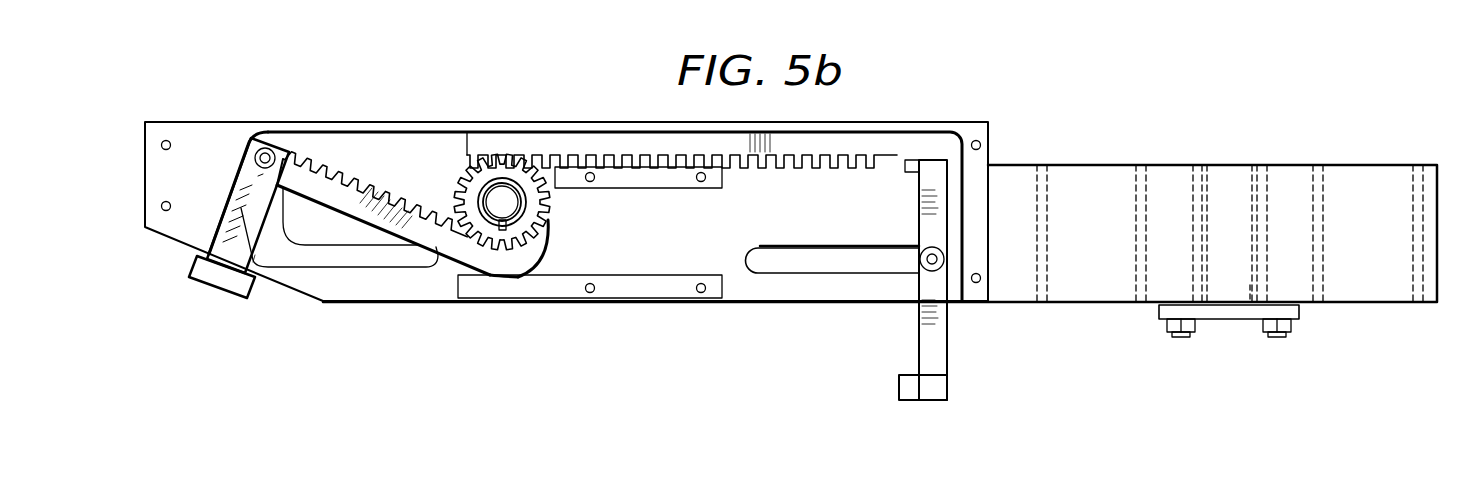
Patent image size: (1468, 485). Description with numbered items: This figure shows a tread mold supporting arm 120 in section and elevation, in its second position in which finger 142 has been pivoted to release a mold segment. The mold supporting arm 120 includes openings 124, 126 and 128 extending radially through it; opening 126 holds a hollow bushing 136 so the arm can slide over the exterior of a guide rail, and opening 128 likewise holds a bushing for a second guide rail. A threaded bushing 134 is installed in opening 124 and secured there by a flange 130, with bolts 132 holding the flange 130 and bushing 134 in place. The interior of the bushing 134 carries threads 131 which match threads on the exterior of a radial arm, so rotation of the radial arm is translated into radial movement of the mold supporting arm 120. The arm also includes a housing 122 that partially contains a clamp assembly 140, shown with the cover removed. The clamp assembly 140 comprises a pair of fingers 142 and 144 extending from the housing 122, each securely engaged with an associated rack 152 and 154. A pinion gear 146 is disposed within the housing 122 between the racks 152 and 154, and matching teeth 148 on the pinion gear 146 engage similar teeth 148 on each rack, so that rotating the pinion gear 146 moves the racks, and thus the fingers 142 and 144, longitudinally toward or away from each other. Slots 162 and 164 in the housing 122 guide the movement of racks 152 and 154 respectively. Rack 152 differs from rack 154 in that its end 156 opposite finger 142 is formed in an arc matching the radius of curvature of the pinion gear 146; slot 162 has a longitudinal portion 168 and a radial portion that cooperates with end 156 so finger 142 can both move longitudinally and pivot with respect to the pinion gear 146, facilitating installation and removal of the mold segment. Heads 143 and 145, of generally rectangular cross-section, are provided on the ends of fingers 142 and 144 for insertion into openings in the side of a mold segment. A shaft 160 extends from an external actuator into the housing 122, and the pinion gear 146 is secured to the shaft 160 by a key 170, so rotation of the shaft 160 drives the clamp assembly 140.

The mold supporting arm 120 is at (1023, 329).
The housing 122 is at (324, 114).
The opening 124 is at (1255, 165).
The opening 126 is at (1138, 165).
The opening 128 is at (1414, 165).
The flange 130 is at (1302, 315).
The threads 131 is at (1252, 282).
The bolts 132 is at (1181, 338).
The threaded bushing 134 is at (1200, 165).
The hollow bushing 136 is at (1040, 164).
The clamp assembly 140 is at (422, 150).
The finger 142 is at (252, 170).
The head 143 is at (210, 302).
The finger 144 is at (950, 342).
The head 145 is at (899, 385).
The pinion gear 146 is at (501, 177).
The teeth 148 is at (541, 172).
The rack 152 is at (432, 250).
The rack 154 is at (630, 145).
The end 156 is at (503, 272).
The shaft 160 is at (520, 204).
The slot 162 is at (272, 262).
The slot 164 is at (813, 266).
The longitudinal portion 168 is at (368, 262).
The key 170 is at (507, 232).